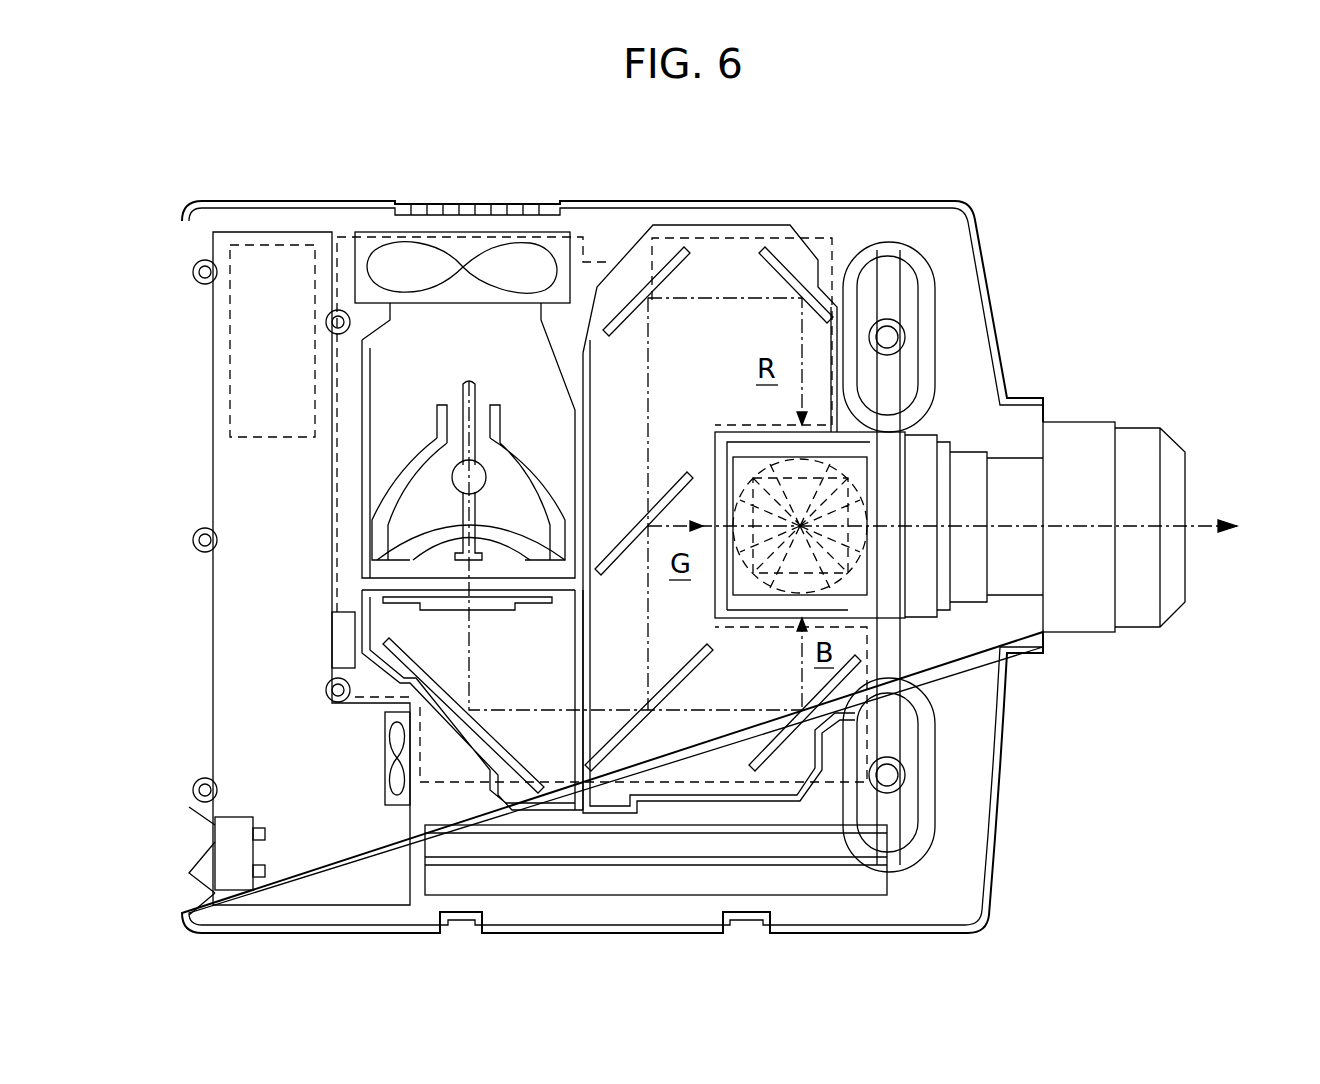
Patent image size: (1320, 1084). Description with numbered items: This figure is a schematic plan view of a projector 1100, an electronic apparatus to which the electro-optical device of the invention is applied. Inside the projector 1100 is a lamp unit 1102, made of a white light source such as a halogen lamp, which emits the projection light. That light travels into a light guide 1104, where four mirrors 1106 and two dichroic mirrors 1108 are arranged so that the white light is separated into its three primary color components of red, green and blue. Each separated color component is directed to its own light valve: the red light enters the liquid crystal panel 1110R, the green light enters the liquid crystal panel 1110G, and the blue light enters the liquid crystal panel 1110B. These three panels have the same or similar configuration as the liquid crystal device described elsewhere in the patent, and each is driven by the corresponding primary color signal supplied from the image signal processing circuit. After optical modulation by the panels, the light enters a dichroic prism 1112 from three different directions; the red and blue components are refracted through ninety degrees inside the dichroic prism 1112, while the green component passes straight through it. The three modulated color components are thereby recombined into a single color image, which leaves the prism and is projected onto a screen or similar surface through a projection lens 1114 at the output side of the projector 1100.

The projector 1100 is at (993, 211).
The lamp unit 1102 is at (520, 360).
The light guide 1104 is at (583, 262).
The mirrors 1106 is at (662, 277).
The dichroic mirrors 1108 is at (641, 530).
The liquid crystal panel 1110R is at (762, 432).
The liquid crystal panel 1110G is at (722, 500).
The liquid crystal panel 1110B is at (752, 612).
The dichroic prism 1112 is at (863, 500).
The projection lens 1114 is at (1150, 435).